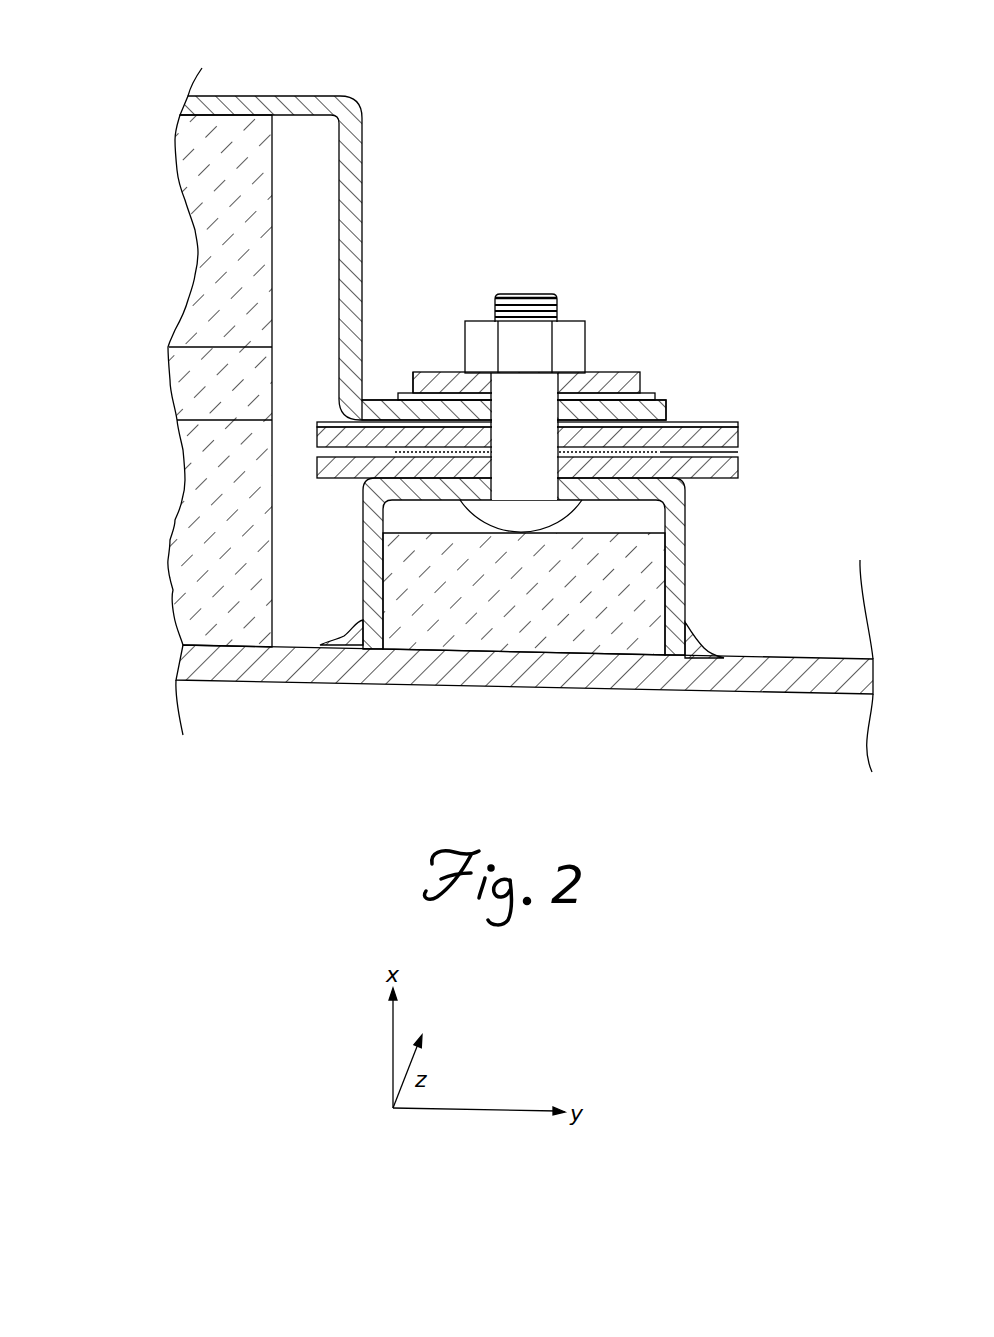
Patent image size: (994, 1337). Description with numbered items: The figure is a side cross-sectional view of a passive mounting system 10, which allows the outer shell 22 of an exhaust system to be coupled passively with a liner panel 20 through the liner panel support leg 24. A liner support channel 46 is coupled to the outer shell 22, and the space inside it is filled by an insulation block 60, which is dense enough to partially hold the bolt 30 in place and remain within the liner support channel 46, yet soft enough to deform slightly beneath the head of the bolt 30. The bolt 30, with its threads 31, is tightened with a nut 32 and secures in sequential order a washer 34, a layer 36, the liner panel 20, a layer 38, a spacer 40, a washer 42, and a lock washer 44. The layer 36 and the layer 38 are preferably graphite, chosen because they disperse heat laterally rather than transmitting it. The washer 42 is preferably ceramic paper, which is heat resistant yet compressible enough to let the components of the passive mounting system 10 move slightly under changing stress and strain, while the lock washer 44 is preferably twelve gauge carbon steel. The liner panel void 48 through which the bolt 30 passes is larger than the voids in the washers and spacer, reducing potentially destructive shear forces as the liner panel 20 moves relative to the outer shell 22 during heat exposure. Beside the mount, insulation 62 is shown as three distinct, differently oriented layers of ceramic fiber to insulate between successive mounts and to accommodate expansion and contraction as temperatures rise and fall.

The passive mounting system 10 is at (626, 110).
The liner panel 20 is at (451, 218).
The outer shell 22 is at (347, 682).
The liner panel support leg 24 is at (666, 420).
The bolt 30 is at (520, 296).
The threads 31 is at (585, 322).
The nut 32 is at (608, 373).
The washer 34 is at (630, 395).
The layer 36 is at (662, 402).
The layer 38 is at (727, 424).
The spacer 40 is at (740, 446).
The washer 42 is at (740, 456).
The lock washer 44 is at (740, 478).
The liner support channel 46 is at (684, 565).
The liner panel void 48 is at (460, 392).
The insulation block 60 is at (437, 613).
The insulation 62 is at (220, 247).